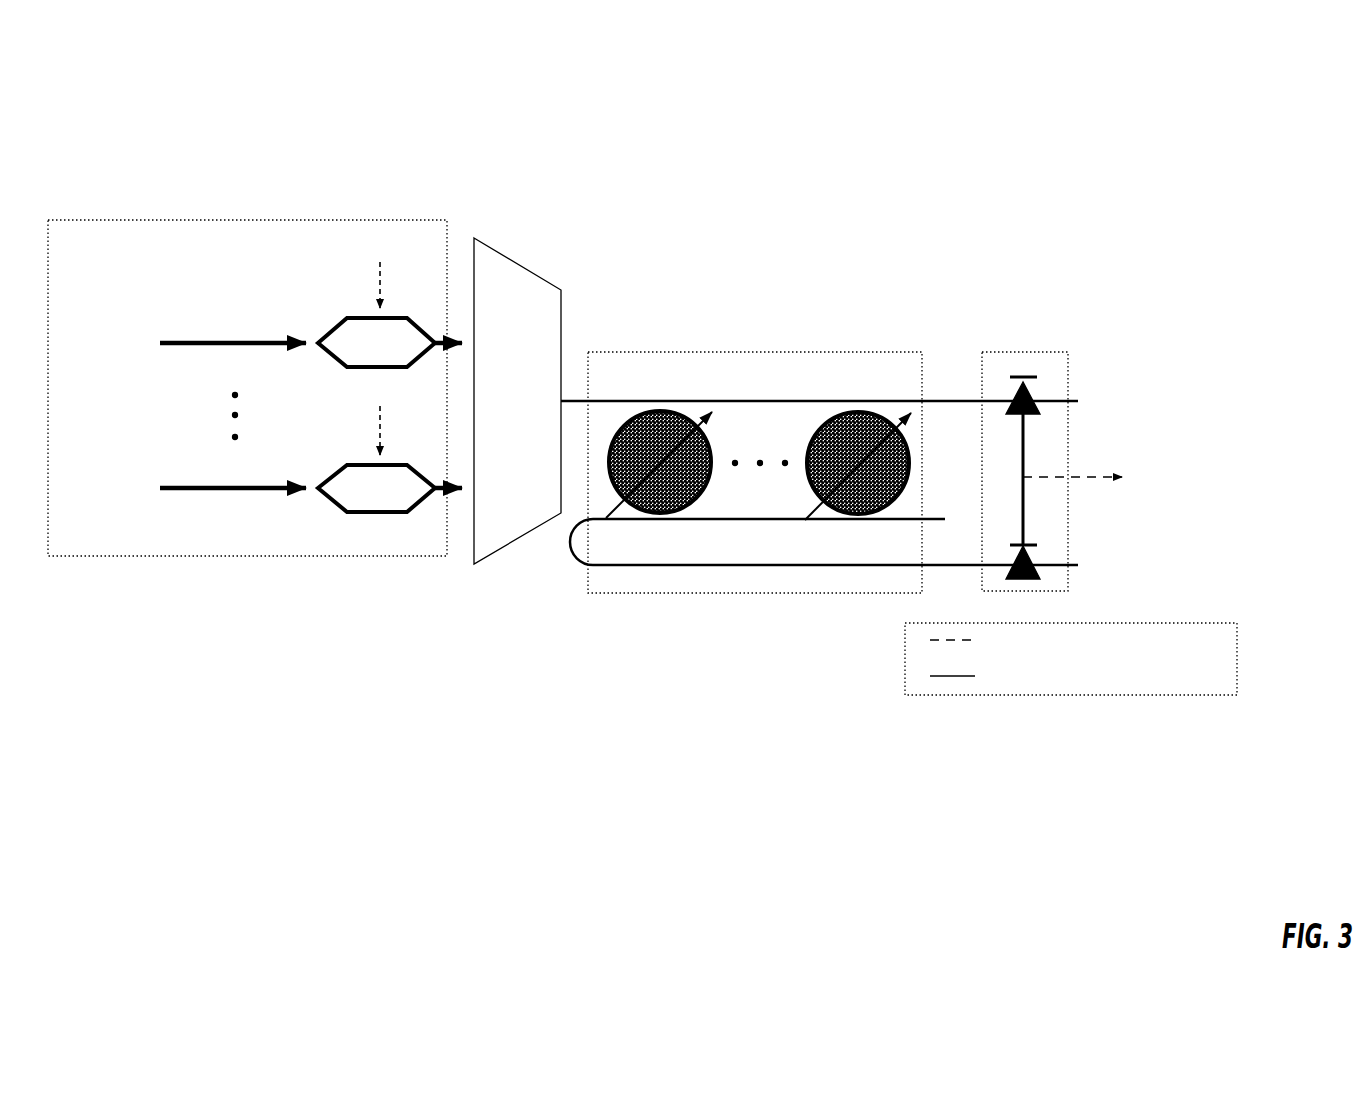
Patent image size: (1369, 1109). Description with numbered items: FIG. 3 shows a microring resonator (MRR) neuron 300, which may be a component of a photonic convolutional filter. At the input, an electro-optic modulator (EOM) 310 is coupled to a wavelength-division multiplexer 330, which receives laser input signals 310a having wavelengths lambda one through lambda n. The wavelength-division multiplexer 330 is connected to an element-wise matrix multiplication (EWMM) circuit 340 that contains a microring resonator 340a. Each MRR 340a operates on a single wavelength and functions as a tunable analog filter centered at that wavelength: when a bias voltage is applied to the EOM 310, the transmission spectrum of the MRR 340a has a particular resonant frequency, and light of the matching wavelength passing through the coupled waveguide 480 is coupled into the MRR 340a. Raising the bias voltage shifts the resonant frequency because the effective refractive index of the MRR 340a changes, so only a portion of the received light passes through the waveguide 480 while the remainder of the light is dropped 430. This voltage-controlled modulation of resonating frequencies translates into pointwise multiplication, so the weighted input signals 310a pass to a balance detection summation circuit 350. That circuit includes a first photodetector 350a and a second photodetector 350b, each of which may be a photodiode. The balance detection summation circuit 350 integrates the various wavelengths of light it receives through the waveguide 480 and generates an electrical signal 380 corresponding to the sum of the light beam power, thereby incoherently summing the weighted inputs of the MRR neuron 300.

The microring resonator neuron 300 is at (775, 136).
The electro-optic modulator 310 is at (255, 440).
The laser input signals 310a is at (347, 512).
The wavelength-division multiplexer 330 is at (518, 264).
The element-wise matrix multiplication circuit 340 is at (819, 406).
The microring resonator 340a is at (875, 320).
The balance detection summation circuit 350 is at (1161, 425).
The first photodetector 350a is at (1079, 395).
The second photodetector 350b is at (1040, 558).
The electrical signal 380 is at (1181, 455).
The dropped light 430 is at (943, 578).
The waveguide 480 is at (956, 393).